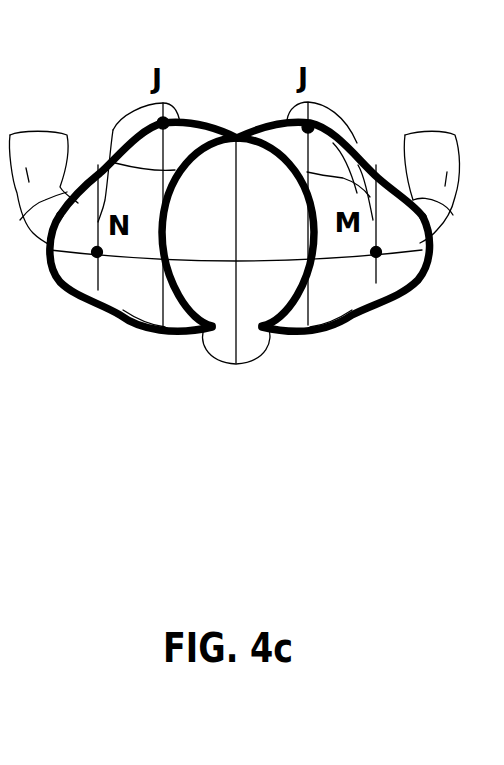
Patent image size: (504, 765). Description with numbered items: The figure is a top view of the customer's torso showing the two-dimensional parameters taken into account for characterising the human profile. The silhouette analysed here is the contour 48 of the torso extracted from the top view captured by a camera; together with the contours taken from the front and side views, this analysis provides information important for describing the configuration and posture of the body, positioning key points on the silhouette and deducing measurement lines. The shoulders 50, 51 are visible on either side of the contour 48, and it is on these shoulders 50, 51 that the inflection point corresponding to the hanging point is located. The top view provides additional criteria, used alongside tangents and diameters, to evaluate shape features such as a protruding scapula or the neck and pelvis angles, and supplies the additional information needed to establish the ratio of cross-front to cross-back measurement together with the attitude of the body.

The contour 48 is at (370, 155).
The shoulder 50 is at (393, 265).
The shoulder 51 is at (62, 265).